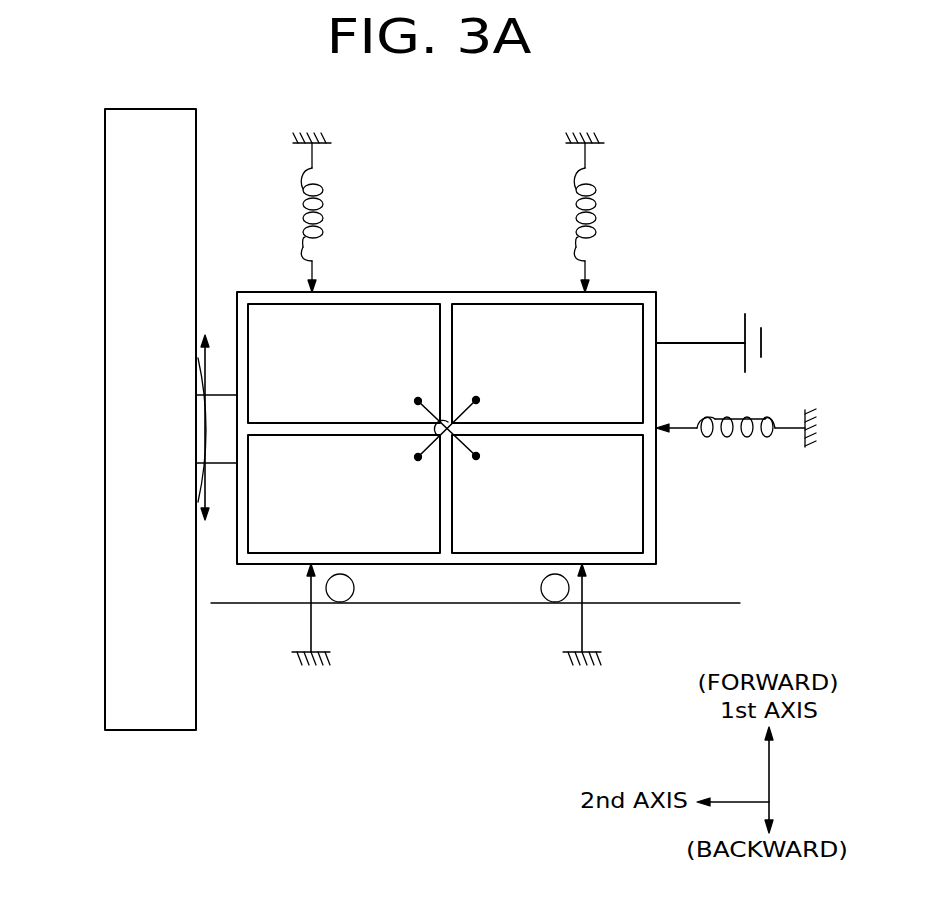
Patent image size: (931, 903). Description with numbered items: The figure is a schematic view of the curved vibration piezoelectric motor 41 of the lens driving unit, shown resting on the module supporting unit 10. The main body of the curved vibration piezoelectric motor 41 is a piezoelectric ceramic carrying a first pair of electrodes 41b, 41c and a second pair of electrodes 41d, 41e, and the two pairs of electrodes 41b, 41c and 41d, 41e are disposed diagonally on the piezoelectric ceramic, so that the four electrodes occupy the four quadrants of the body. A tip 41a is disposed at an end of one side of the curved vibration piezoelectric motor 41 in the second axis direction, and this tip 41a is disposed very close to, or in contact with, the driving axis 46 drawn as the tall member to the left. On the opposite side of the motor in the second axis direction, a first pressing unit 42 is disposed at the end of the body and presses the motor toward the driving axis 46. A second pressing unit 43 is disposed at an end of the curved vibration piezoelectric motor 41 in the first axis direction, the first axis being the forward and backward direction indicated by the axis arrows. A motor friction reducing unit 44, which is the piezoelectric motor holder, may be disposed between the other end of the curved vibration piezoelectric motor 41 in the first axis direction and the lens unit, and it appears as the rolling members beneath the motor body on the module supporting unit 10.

The module supporting unit 10 is at (658, 630).
The curved vibration piezoelectric motor 41 is at (523, 389).
The tip 41a is at (217, 432).
The electrode 41b is at (371, 514).
The electrode 41c is at (530, 376).
The electrode 41d is at (371, 376).
The electrode 41e is at (530, 514).
The first pressing unit 42 is at (745, 438).
The second pressing unit 43 is at (322, 205).
The motor friction reducing unit 44 is at (556, 594).
The driving axis 46 is at (147, 716).